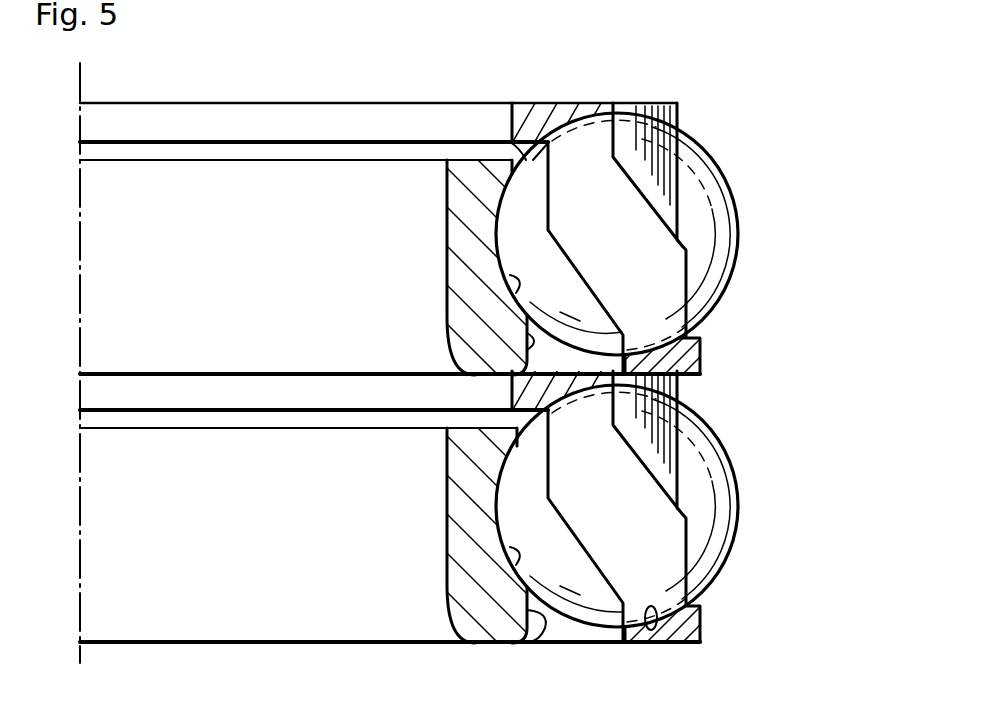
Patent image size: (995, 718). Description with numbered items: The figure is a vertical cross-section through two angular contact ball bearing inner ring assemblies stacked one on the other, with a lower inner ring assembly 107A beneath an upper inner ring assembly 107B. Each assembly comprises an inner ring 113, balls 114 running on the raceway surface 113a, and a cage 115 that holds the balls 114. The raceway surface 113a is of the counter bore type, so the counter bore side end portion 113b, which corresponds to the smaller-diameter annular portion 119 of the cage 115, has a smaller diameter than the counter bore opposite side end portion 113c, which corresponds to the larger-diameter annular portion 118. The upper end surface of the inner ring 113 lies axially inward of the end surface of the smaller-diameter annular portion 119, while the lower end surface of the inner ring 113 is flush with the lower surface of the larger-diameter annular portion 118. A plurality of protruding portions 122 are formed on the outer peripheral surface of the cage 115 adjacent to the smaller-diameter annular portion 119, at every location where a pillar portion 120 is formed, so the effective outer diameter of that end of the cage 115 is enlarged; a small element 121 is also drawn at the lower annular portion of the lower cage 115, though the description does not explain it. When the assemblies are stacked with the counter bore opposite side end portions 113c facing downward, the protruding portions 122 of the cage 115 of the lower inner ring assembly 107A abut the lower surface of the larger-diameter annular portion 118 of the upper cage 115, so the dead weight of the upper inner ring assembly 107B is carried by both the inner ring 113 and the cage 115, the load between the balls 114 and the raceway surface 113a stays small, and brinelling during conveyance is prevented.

The lower inner ring assembly 107A is at (746, 470).
The upper inner ring assembly 107B is at (746, 203).
The inner ring 113 is at (455, 273).
The raceway surface 113a is at (518, 280).
The counter bore side end portion 113b is at (510, 140).
The counter bore opposite side end portion 113c is at (527, 350).
The balls 114 is at (703, 232).
The cage 115 is at (550, 238).
The larger-diameter annular portion 118 is at (700, 355).
The smaller-diameter annular portion 119 is at (537, 103).
The pillar portions 120 is at (655, 280).
The pin 121 is at (660, 630).
The protruding portions 122 is at (678, 110).